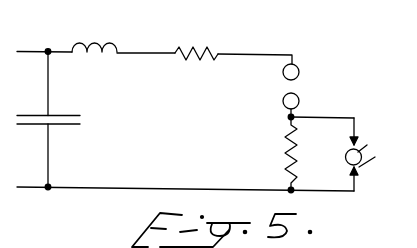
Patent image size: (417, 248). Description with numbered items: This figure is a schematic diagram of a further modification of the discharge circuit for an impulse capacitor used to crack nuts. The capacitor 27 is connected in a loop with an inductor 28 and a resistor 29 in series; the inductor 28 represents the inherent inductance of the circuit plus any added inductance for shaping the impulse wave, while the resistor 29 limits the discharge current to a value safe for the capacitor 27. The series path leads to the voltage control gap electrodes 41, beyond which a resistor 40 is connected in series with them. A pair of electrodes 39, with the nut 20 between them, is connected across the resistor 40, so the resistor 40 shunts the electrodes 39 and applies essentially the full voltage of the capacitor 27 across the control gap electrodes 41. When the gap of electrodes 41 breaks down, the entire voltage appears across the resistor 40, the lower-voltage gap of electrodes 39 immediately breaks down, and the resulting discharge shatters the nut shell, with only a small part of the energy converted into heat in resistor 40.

The nut 20 is at (347, 159).
The capacitor 27 is at (72, 125).
The inductor 28 is at (106, 56).
The resistor 29 is at (201, 59).
The electrodes 39 is at (376, 145).
The resistor 40 is at (285, 156).
The voltage control gap electrodes 41 is at (299, 73).